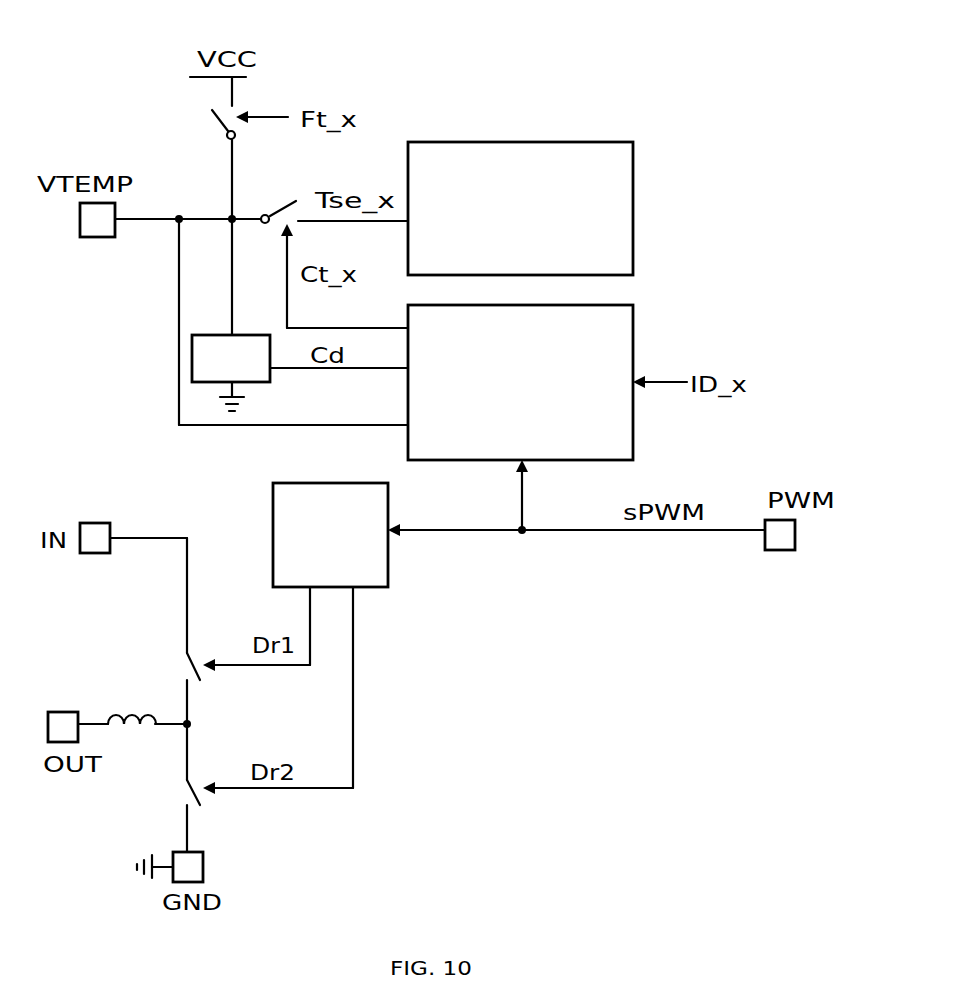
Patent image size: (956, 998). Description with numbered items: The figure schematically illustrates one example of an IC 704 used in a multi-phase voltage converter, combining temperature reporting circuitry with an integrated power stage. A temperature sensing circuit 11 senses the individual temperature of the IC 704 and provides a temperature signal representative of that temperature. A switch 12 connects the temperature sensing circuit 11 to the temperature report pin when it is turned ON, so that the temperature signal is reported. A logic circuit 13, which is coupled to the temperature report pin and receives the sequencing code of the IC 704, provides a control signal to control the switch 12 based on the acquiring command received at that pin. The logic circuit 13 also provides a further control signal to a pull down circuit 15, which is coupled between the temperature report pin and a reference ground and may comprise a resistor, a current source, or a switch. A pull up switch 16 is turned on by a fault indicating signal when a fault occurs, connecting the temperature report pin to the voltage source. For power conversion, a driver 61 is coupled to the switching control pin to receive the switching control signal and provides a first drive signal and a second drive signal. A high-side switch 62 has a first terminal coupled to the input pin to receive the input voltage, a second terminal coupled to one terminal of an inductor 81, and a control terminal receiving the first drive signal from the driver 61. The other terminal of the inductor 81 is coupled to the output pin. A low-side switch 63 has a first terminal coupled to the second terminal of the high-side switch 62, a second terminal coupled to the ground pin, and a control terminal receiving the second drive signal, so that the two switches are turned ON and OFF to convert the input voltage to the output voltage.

The IC 704 is at (757, 80).
The pull up switch 16 is at (206, 119).
The switch 12 is at (286, 197).
The temperature sensing circuit 11 is at (406, 167).
The logic circuit 13 is at (408, 314).
The pull down circuit 15 is at (231, 373).
The driver 61 is at (273, 518).
The high-side switch 62 is at (183, 672).
The low-side switch 63 is at (183, 795).
The inductor 81 is at (136, 710).